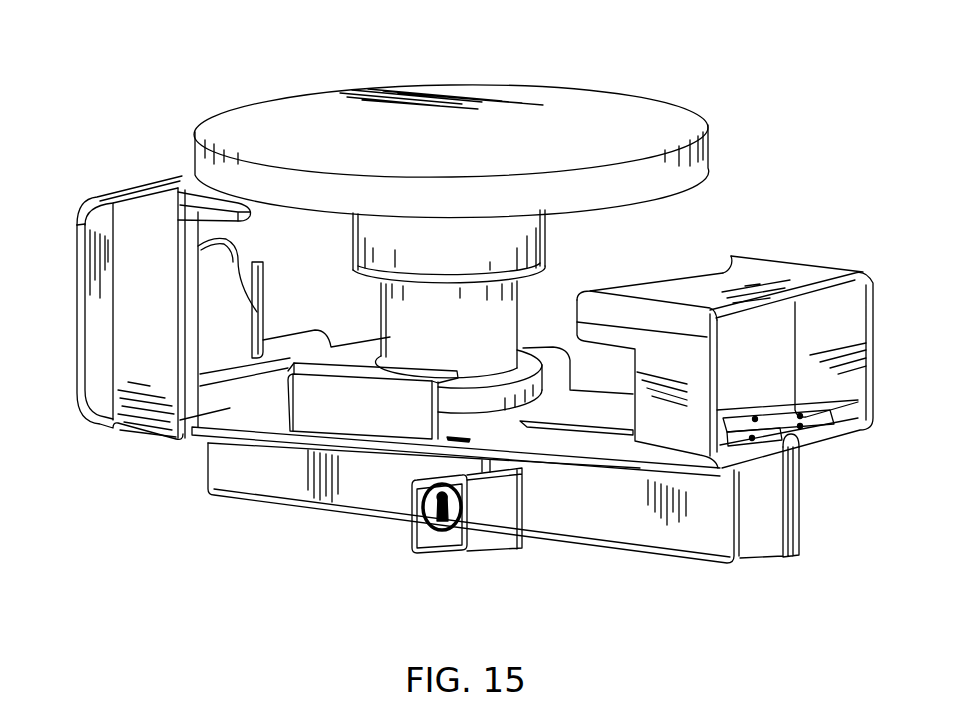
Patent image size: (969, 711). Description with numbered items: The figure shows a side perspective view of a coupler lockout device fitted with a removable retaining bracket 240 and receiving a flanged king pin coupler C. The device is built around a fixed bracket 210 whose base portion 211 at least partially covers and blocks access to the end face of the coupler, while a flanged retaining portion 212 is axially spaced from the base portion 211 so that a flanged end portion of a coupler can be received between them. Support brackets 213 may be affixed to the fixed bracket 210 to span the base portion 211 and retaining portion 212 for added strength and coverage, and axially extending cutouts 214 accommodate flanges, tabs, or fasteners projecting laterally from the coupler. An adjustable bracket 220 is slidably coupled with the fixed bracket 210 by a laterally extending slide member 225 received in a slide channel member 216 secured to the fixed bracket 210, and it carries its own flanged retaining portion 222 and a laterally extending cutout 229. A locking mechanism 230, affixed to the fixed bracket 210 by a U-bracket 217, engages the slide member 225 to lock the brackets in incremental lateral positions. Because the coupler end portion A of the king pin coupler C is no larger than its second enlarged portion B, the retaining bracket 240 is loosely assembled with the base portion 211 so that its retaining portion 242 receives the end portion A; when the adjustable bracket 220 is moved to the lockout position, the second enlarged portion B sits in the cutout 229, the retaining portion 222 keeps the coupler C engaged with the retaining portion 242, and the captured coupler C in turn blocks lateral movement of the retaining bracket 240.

The fixed bracket 210 is at (111, 261).
The base portion 211 is at (260, 416).
The flanged retaining portion 212 is at (207, 195).
The support bracket 213 is at (150, 342).
The axially extending cutout 214 is at (238, 260).
The slide channel member 216 is at (377, 493).
The U-bracket 217 is at (495, 528).
The adjustable bracket 220 is at (800, 253).
The flanged retaining portion 222 is at (632, 310).
The slide member 225 is at (770, 535).
The laterally extending cutout 229 is at (712, 281).
The locking mechanism 230 is at (467, 567).
The removable retaining bracket 240 is at (327, 410).
The retaining portion 242 is at (393, 377).
The coupler end portion A is at (493, 407).
The second enlarged portion B is at (513, 242).
The king pin coupler C is at (643, 66).